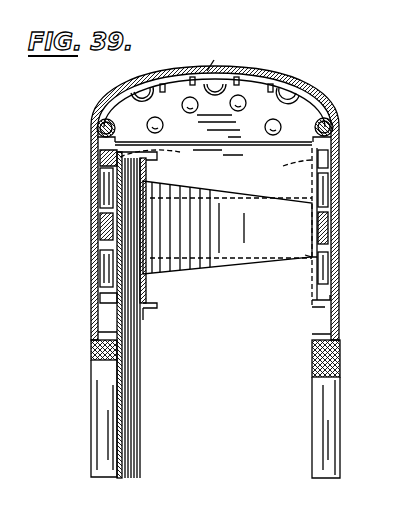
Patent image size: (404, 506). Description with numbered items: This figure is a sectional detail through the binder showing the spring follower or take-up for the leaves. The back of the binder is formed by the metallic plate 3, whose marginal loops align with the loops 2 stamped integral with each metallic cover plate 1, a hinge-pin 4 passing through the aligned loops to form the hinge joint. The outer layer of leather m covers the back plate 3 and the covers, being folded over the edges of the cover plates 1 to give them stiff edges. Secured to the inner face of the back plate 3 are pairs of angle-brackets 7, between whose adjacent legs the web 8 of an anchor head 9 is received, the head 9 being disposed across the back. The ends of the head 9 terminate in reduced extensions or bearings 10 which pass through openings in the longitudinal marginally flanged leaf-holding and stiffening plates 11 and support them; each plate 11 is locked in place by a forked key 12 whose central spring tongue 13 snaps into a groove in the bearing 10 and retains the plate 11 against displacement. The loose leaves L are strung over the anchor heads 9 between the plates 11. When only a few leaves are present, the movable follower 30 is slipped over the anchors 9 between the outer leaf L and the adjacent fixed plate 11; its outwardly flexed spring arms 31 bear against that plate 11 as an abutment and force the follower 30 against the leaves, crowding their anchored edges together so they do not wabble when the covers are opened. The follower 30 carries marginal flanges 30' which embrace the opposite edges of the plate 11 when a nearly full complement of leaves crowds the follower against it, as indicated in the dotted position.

The back plate 3 is at (246, 80).
The angle-brackets 7 is at (262, 106).
The hinge-pin 4 is at (328, 110).
The loops 2 is at (334, 127).
The leather layer m is at (214, 60).
The metallic plate 1 is at (95, 315).
The loose leaves L is at (128, 437).
The follower 30 is at (214, 228).
The marginal flanges 30' is at (234, 330).
The spring arms 31 is at (264, 242).
The anchor head 9 is at (303, 256).
The web 8 is at (100, 153).
The leaf-holding and stiffening plates 11 is at (104, 178).
The forked key 12 is at (100, 215).
The spring tongue 13 is at (100, 250).
The bearings 10 is at (100, 278).